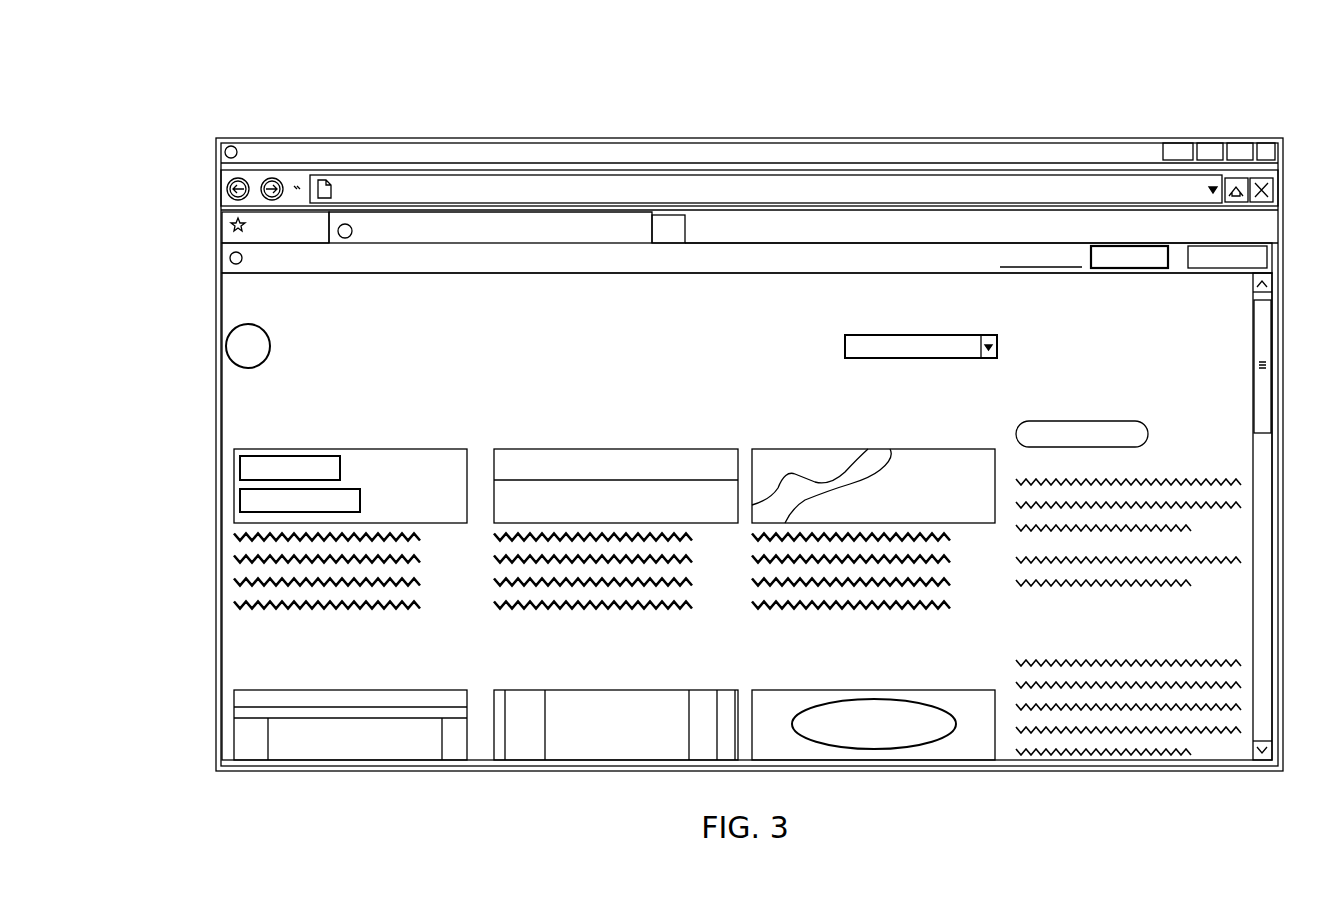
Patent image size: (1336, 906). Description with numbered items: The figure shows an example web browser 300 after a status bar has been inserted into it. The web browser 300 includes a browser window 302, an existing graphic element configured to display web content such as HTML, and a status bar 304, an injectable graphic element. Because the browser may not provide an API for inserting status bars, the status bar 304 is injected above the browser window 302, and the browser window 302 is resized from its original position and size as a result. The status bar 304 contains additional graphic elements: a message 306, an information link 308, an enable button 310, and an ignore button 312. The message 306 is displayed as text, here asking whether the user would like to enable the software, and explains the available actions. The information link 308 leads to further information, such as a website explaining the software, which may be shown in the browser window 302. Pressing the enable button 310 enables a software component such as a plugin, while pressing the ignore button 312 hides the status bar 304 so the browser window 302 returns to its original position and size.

The web browser 300 is at (566, 116).
The browser window 302 is at (245, 430).
The status bar 304 is at (222, 262).
The message 306 is at (538, 247).
The information link 308 is at (1024, 246).
The enable button 310 is at (1130, 240).
The ignore button 312 is at (1220, 240).